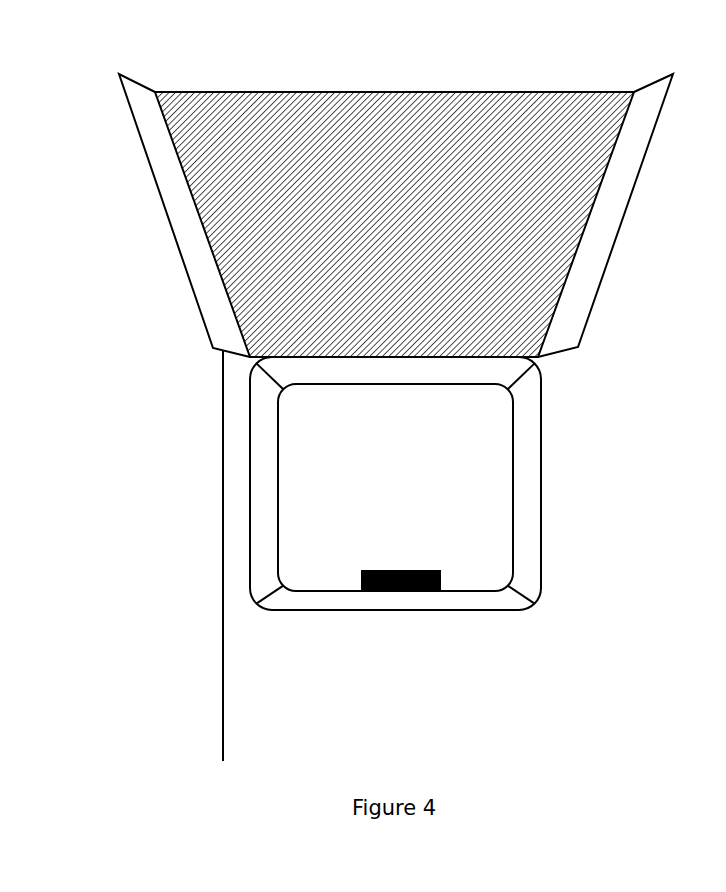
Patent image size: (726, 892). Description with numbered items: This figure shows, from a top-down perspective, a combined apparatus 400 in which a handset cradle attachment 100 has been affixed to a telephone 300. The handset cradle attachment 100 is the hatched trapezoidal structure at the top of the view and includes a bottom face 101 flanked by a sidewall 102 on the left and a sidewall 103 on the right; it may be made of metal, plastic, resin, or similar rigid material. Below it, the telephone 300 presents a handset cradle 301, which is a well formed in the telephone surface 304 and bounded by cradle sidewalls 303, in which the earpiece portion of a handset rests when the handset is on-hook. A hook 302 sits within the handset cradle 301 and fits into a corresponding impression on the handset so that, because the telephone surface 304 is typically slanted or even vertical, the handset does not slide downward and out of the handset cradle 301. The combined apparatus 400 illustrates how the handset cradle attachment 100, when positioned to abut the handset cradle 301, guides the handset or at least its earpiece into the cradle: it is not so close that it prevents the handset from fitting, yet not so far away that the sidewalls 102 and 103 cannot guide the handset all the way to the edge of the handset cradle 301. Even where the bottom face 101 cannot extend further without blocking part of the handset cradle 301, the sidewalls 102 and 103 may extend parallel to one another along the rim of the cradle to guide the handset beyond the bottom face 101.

The combined apparatus 400 is at (79, 57).
The handset cradle attachment 100 is at (398, 93).
The bottom face 101 is at (413, 224).
The sidewall 102 is at (170, 222).
The sidewall 103 is at (621, 226).
The telephone 300 is at (222, 452).
The handset cradle 301 is at (413, 476).
The hook 302 is at (408, 570).
The cradle sidewalls 303 is at (542, 480).
The telephone surface 304 is at (655, 328).